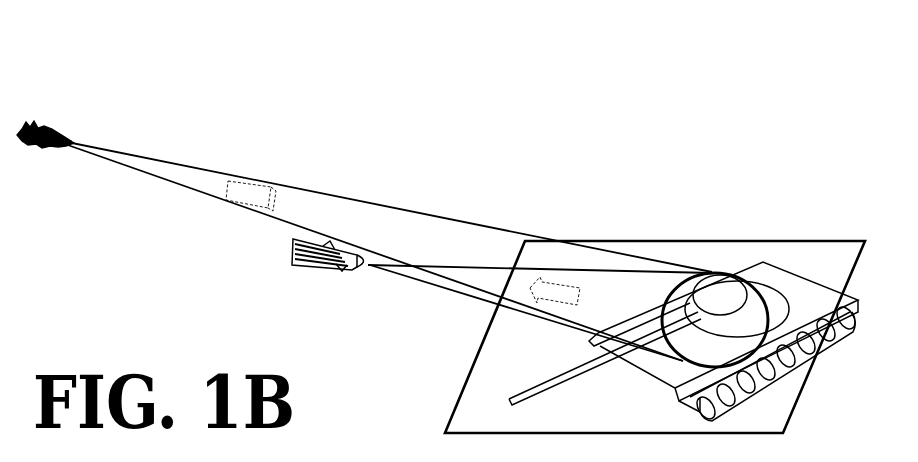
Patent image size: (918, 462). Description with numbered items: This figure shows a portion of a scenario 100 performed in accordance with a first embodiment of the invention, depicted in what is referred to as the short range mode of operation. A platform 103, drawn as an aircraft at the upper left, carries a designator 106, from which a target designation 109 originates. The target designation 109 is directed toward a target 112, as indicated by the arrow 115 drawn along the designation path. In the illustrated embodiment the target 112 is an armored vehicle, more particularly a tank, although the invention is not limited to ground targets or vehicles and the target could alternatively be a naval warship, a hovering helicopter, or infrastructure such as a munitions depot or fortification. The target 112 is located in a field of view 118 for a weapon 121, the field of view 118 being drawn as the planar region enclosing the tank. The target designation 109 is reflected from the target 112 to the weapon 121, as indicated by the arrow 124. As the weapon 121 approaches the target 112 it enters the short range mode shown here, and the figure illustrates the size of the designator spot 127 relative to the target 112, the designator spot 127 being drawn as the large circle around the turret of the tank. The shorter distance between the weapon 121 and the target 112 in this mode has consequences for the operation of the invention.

The scenario 100 is at (150, 68).
The platform 103 is at (50, 128).
The designator 106 is at (56, 142).
The target designation 109 is at (337, 195).
The target 112 is at (788, 268).
The arrow 115 is at (273, 188).
The field of view 118 is at (569, 427).
The weapon 121 is at (292, 269).
The arrow 124 is at (555, 303).
The designator spot 127 is at (739, 262).